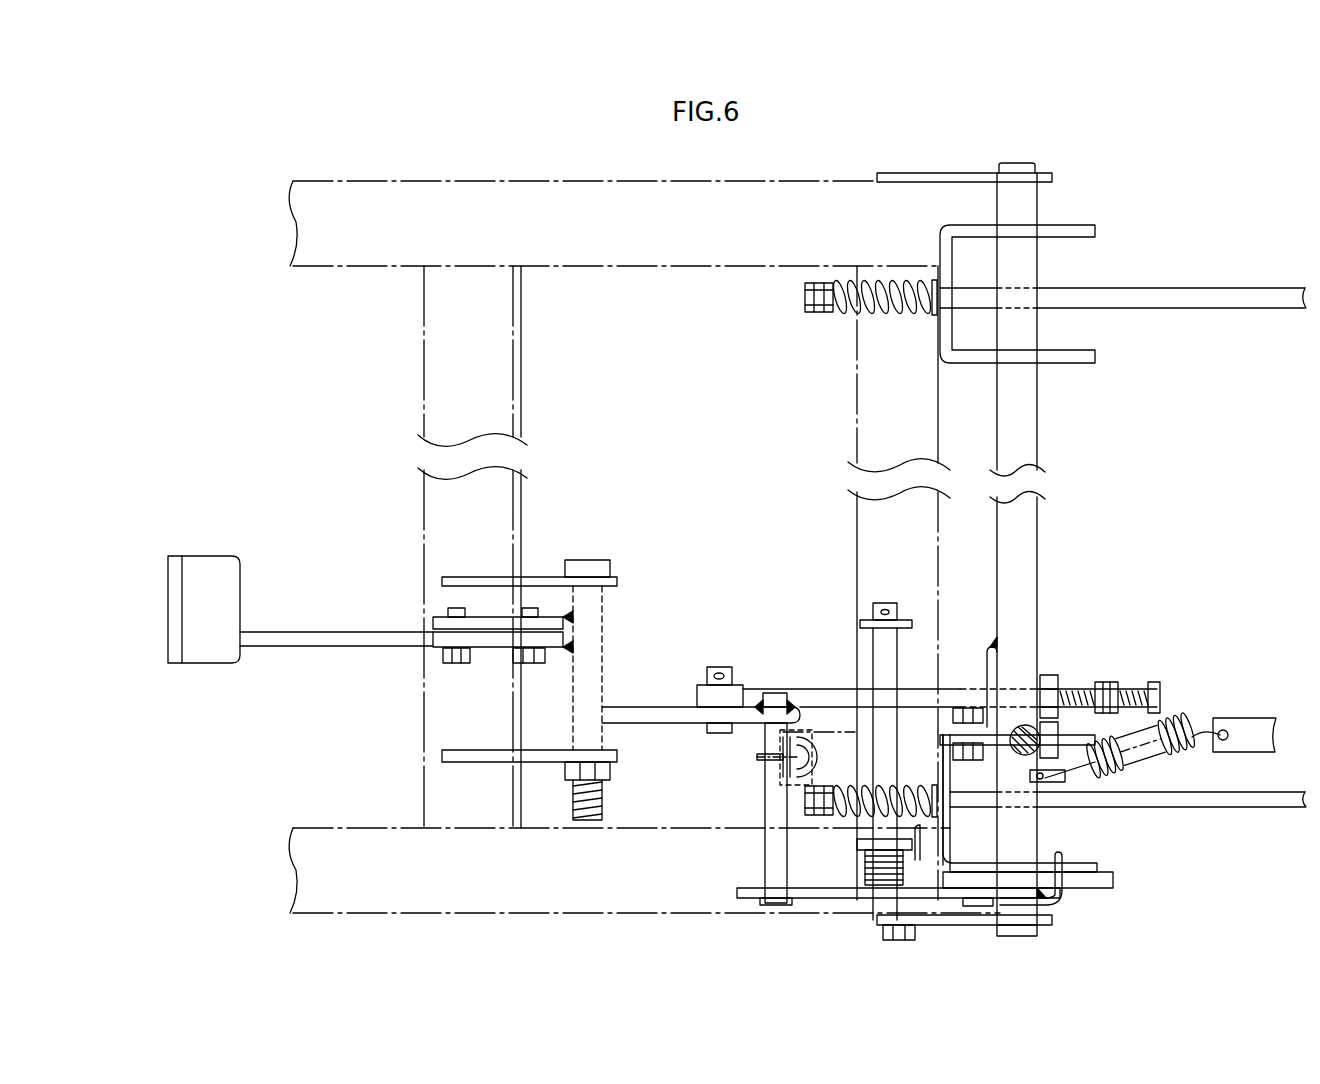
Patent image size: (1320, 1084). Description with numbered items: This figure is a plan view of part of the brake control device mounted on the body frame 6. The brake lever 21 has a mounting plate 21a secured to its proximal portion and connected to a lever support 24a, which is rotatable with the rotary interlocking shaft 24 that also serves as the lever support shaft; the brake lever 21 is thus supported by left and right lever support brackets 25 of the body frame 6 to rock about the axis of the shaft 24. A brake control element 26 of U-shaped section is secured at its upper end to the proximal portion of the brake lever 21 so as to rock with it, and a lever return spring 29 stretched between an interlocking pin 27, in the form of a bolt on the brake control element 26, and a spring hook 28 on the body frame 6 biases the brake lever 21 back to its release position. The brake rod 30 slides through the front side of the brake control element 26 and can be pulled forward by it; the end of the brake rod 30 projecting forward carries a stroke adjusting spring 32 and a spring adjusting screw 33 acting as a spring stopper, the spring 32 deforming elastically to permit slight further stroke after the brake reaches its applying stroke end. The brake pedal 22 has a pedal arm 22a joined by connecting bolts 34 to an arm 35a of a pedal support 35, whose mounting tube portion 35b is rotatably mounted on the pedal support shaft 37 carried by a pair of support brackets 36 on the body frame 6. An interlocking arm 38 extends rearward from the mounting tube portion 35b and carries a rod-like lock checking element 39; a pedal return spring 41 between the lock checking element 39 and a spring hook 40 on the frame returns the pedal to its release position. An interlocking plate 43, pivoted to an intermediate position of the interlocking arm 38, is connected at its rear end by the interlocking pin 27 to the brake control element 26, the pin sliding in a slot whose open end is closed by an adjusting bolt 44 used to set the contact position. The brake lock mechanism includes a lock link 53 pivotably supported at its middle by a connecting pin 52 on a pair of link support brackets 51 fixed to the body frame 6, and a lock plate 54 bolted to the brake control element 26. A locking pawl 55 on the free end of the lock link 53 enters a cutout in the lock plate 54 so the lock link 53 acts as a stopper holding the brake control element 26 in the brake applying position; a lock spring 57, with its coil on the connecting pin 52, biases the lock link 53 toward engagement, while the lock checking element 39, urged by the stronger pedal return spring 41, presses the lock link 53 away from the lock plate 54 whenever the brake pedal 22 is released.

The body frame 6 is at (348, 820).
The brake lever 21 is at (1018, 755).
The mounting plate 21a is at (957, 735).
The brake pedal 22 is at (213, 575).
The pedal arm 22a is at (313, 635).
The rotary interlocking shaft 24 is at (1023, 443).
The lever support 24a is at (985, 675).
The lever support bracket 25 is at (932, 179).
The brake control element 26 is at (1073, 363).
The interlocking pin 27 is at (1045, 672).
The spring hook 28 is at (1250, 725).
The lever return spring 29 is at (1175, 722).
The brake rod 30 is at (1208, 297).
The stroke adjusting spring 32 is at (882, 318).
The spring adjusting screw 33 is at (812, 315).
The connecting bolts 34 is at (528, 658).
The pedal support 35 is at (588, 628).
The arm 35a is at (558, 624).
The mounting tube portion 35b is at (612, 651).
The support brackets 36 is at (537, 577).
The pedal support shaft 37 is at (600, 588).
The interlocking arm 38 is at (667, 722).
The lock checking element 39 is at (775, 797).
The spring hook 40 is at (765, 772).
The pedal return spring 41 is at (810, 762).
The interlocking plate 43 is at (812, 690).
The adjusting bolt 44 is at (1135, 685).
The link support bracket 51 is at (862, 620).
The connecting pin 52 is at (885, 668).
The lock link 53 is at (740, 888).
The lock plate 54 is at (1113, 880).
The locking pawl 55 is at (1060, 857).
The lock spring 57 is at (868, 873).